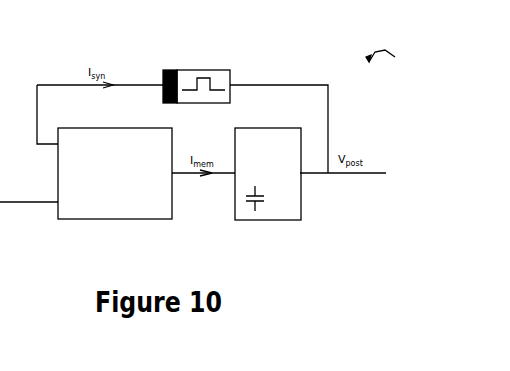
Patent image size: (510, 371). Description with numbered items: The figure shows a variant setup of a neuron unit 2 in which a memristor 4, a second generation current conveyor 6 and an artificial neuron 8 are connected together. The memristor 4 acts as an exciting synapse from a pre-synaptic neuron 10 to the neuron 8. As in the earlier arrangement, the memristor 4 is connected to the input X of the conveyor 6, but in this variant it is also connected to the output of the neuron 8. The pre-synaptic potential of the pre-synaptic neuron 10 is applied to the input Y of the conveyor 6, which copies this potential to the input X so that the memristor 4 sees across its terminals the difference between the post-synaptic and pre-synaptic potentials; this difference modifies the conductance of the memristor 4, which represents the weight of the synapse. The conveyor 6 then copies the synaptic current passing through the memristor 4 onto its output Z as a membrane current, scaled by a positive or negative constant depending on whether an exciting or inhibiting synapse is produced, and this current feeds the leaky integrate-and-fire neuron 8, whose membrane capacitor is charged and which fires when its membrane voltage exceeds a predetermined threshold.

The neuron unit 2 is at (396, 57).
The memristor 4 is at (208, 70).
The current conveyor 6 is at (118, 219).
The artificial neuron 8 is at (267, 220).
The pre-synaptic neuron 10 is at (32, 203).